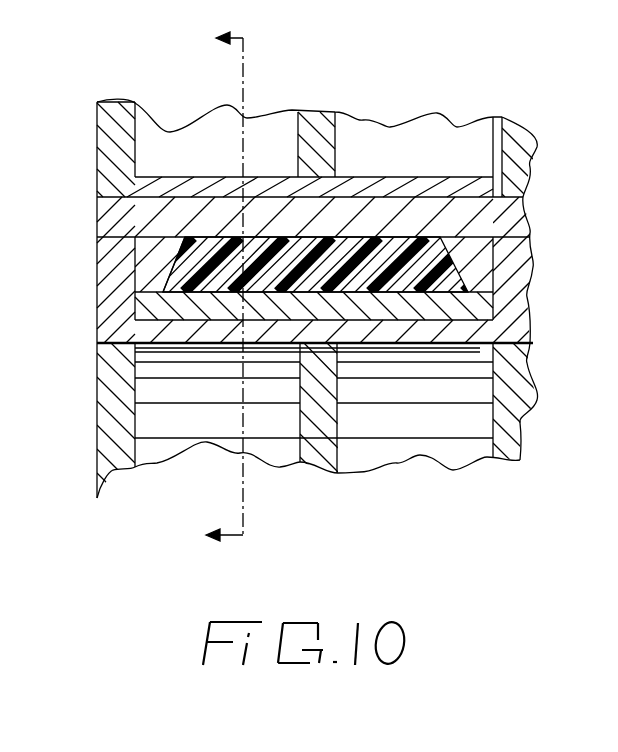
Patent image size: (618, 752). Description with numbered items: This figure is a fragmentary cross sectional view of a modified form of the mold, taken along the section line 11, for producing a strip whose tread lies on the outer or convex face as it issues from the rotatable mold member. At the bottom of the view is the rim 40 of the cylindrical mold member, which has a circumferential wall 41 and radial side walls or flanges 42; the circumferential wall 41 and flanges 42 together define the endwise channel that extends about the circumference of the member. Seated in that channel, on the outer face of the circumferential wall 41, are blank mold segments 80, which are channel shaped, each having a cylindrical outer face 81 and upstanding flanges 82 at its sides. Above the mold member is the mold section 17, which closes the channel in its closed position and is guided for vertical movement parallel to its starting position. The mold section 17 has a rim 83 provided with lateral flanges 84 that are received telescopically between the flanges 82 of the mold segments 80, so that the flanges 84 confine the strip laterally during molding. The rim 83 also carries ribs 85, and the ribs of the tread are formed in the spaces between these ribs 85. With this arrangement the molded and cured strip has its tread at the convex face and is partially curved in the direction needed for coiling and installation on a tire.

The section line 11 is at (201, 518).
The mold section 17 is at (100, 157).
The rim 83 is at (97, 203).
The radial side walls or flanges 42 is at (110, 290).
The flanges 82 is at (135, 245).
The lateral flanges 84 is at (163, 247).
The cylindrical outer face 81 is at (380, 285).
The ribs 85 is at (185, 278).
The mold segments 80 is at (440, 307).
The circumferential wall 41 is at (401, 327).
The rim 40 is at (97, 343).